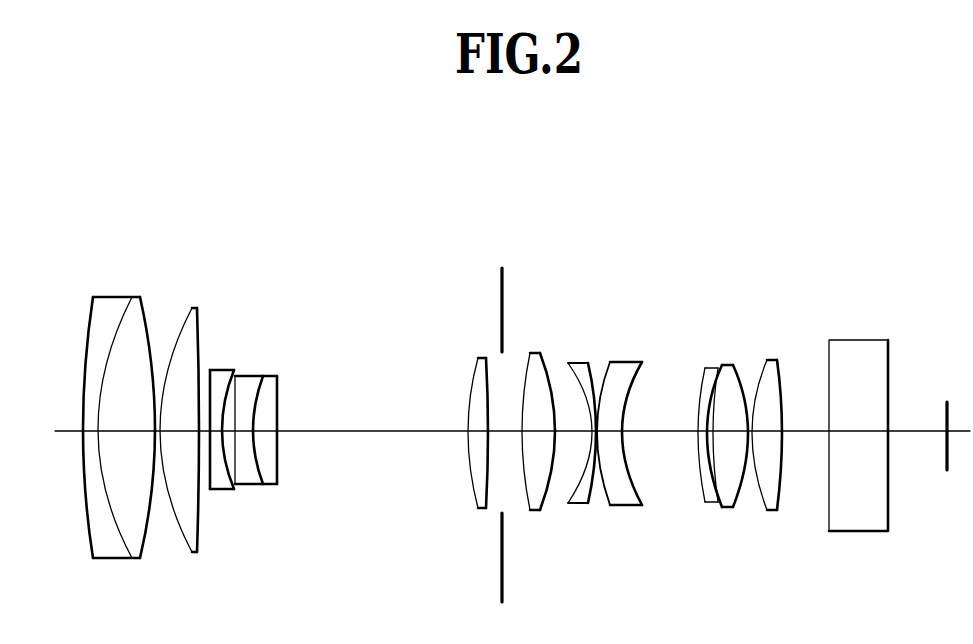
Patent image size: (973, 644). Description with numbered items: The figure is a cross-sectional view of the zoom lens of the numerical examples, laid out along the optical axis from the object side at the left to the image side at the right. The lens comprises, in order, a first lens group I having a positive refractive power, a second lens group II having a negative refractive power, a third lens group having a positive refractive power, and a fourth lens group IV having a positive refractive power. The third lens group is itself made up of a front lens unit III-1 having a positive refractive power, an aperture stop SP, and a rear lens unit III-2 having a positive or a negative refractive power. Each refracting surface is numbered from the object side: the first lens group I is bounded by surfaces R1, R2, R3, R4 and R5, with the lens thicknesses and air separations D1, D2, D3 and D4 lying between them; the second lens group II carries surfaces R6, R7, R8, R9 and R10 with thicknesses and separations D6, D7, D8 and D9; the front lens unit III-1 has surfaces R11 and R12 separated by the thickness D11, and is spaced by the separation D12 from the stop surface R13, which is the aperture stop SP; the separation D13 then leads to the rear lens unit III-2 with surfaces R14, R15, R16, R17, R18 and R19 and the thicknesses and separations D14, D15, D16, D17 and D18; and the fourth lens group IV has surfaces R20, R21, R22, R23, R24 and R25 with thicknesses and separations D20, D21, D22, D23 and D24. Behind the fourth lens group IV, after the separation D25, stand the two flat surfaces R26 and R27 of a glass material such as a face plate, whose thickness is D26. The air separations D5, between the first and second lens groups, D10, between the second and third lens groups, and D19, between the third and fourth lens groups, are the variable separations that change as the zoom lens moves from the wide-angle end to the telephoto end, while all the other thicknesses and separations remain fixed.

The first lens group I is at (42, 242).
The second lens group II is at (372, 222).
The front lens unit III-1 is at (497, 302).
The rear lens unit III-2 is at (677, 197).
The fourth lens group IV is at (672, 197).
The aperture stop SP is at (513, 382).
The first lens surface R1 is at (85, 318).
The second lens surface R2 is at (120, 318).
The third lens surface R3 is at (146, 320).
The fourth lens surface R4 is at (182, 325).
The fifth lens surface R5 is at (198, 322).
The sixth lens surface R6 is at (211, 368).
The seventh lens surface R7 is at (233, 371).
The eighth lens surface R8 is at (237, 377).
The ninth lens surface R9 is at (262, 377).
The tenth lens surface R10 is at (277, 378).
The eleventh lens surface R11 is at (470, 378).
The twelfth lens surface R12 is at (486, 358).
The stop surface R13 is at (504, 282).
The fourteenth lens surface R14 is at (529, 353).
The fifteenth lens surface R15 is at (542, 354).
The sixteenth lens surface R16 is at (569, 362).
The seventeenth lens surface R17 is at (588, 362).
The eighteenth lens surface R18 is at (611, 362).
The nineteenth lens surface R19 is at (643, 361).
The twentieth lens surface R20 is at (704, 368).
The twenty-first lens surface R21 is at (715, 368).
The twenty-second lens surface R22 is at (722, 365).
The twenty-third lens surface R23 is at (735, 364).
The twenty-fourth lens surface R24 is at (768, 360).
The twenty-fifth lens surface R25 is at (779, 360).
The face plate surface R26 is at (830, 345).
The face plate surface R27 is at (889, 345).
The first lens thickness D1 is at (90, 445).
The second lens thickness D2 is at (122, 450).
The third air separation D3 is at (158, 458).
The fourth lens thickness D4 is at (181, 465).
The fifth air separation D5 is at (205, 465).
The sixth lens thickness D6 is at (217, 462).
The seventh air separation D7 is at (229, 462).
The eighth lens thickness D8 is at (245, 462).
The ninth lens thickness D9 is at (268, 452).
The tenth air separation D10 is at (387, 434).
The eleventh lens thickness D11 is at (475, 443).
The twelfth air separation D12 is at (497, 443).
The thirteenth air separation D13 is at (513, 450).
The fourteenth lens thickness D14 is at (538, 455).
The fifteenth air separation D15 is at (567, 460).
The sixteenth lens thickness D16 is at (593, 455).
The seventeenth air separation D17 is at (598, 460).
The eighteenth lens thickness D18 is at (610, 455).
The nineteenth air separation D19 is at (665, 455).
The twentieth lens thickness D20 is at (705, 460).
The twenty-first air separation D21 is at (712, 465).
The twenty-second lens thickness D22 is at (727, 465).
The twenty-third air separation D23 is at (750, 462).
The twenty-fourth lens thickness D24 is at (767, 460).
The twenty-fifth air separation D25 is at (805, 452).
The face plate thickness D26 is at (858, 445).